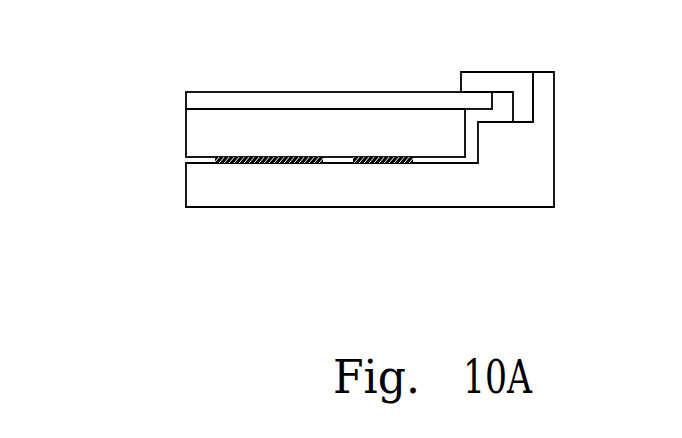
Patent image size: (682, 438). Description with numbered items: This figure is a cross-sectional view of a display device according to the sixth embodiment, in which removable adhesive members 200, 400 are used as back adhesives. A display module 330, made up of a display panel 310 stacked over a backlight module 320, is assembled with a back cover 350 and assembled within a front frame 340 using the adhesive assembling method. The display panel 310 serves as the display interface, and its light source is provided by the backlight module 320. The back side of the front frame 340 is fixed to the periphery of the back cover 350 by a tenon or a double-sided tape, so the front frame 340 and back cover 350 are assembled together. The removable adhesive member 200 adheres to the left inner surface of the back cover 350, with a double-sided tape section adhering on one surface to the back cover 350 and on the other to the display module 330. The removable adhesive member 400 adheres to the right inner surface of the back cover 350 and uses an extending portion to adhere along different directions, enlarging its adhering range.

The removable adhesive member 200 is at (266, 163).
The display panel 310 is at (187, 97).
The backlight module 320 is at (187, 152).
The display module 330 is at (262, 126).
The front frame 340 is at (520, 75).
The back cover 350 is at (541, 206).
The removable adhesive member 400 is at (387, 163).